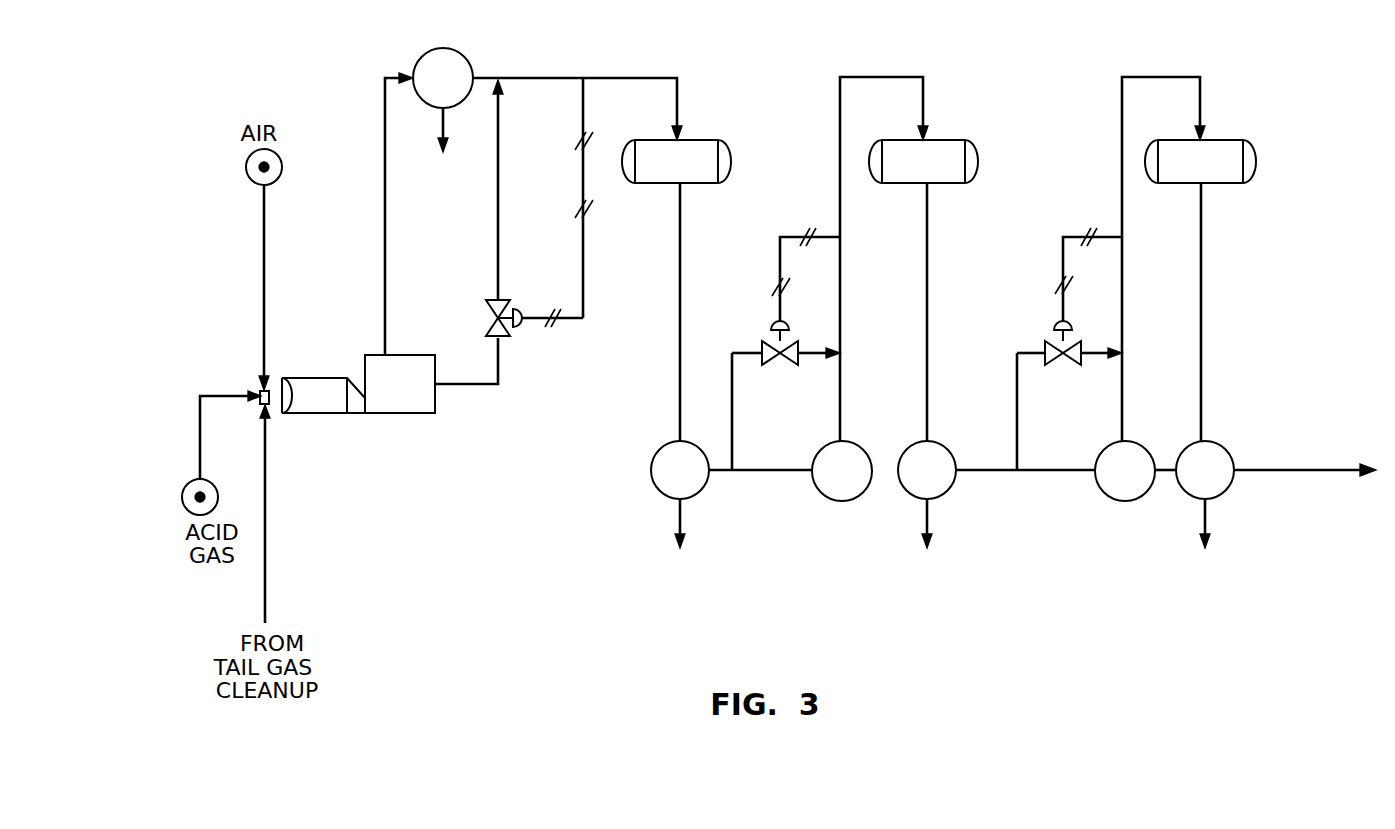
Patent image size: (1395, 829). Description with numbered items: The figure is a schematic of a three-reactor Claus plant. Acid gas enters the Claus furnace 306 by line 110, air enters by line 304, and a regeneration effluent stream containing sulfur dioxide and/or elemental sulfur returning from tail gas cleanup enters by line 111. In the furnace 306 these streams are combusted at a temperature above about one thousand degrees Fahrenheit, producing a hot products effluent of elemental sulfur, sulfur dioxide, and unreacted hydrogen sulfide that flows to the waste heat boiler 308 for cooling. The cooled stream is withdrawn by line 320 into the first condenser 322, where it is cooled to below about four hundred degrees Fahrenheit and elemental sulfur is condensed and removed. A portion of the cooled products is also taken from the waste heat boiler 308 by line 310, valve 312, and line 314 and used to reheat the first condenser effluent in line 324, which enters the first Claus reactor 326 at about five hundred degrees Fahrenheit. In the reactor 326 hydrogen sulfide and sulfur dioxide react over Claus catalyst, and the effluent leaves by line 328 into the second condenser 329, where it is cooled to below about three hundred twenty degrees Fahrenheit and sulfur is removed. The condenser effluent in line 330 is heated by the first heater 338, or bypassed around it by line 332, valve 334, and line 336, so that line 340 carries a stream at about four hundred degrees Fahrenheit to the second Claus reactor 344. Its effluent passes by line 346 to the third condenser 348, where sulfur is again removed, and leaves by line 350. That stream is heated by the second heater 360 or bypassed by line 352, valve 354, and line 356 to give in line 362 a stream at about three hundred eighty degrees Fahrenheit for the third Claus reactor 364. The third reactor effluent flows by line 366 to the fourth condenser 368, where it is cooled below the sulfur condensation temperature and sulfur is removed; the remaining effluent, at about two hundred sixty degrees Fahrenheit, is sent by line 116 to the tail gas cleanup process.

The acid gas line 110 is at (200, 460).
The regeneration effluent line 111 is at (267, 568).
The fourth condenser effluent line 116 is at (1257, 468).
The air line 304 is at (263, 285).
The Claus furnace 306 is at (295, 415).
The waste heat boiler 308 is at (403, 415).
The line 310 is at (500, 358).
The valve 312 is at (498, 297).
The line 314 is at (498, 225).
The line 320 is at (385, 295).
The first condenser 322 is at (455, 48).
The line 324 is at (527, 78).
The first Claus reactor 326 is at (697, 138).
The line 328 is at (680, 303).
The second condenser 329 is at (650, 472).
The line 330 is at (767, 473).
The bypass line 332 is at (735, 455).
The valve 334 is at (787, 367).
The bypass line 336 is at (817, 350).
The first heater 338 is at (860, 497).
The line 340 is at (843, 402).
The second Claus reactor 344 is at (943, 138).
The line 346 is at (927, 300).
The third condenser 348 is at (950, 450).
The line 350 is at (1080, 473).
The bypass line 352 is at (1019, 455).
The valve 354 is at (1068, 363).
The bypass line 356 is at (1097, 350).
The second heater 360 is at (1147, 493).
The line 362 is at (1122, 402).
The third Claus reactor 364 is at (1217, 137).
The line 366 is at (1201, 302).
The fourth condenser 368 is at (1228, 448).